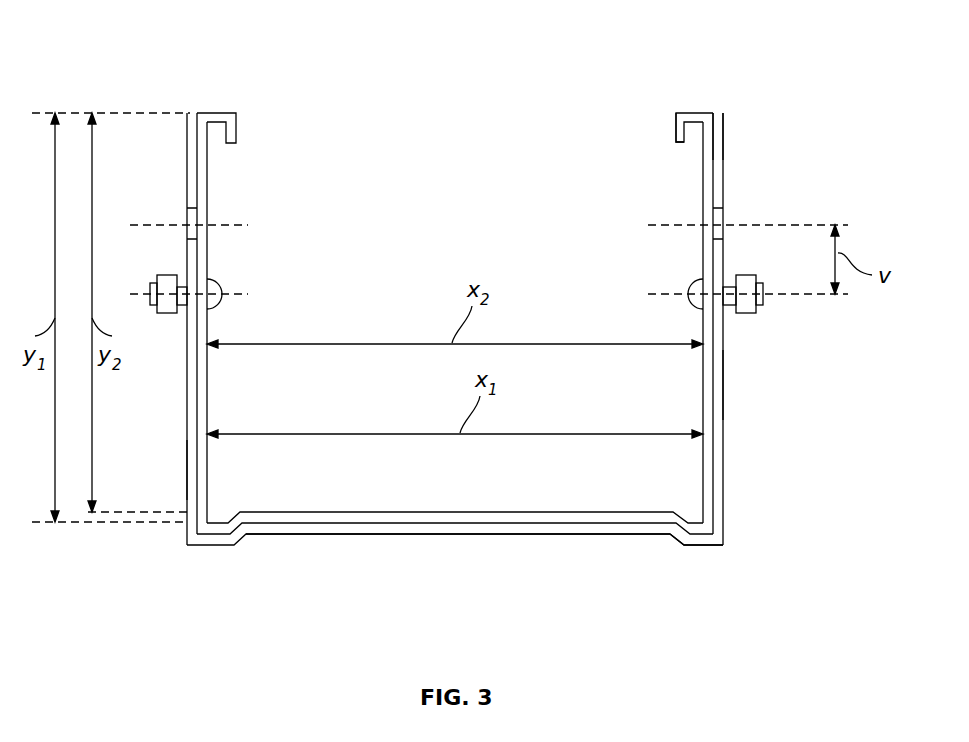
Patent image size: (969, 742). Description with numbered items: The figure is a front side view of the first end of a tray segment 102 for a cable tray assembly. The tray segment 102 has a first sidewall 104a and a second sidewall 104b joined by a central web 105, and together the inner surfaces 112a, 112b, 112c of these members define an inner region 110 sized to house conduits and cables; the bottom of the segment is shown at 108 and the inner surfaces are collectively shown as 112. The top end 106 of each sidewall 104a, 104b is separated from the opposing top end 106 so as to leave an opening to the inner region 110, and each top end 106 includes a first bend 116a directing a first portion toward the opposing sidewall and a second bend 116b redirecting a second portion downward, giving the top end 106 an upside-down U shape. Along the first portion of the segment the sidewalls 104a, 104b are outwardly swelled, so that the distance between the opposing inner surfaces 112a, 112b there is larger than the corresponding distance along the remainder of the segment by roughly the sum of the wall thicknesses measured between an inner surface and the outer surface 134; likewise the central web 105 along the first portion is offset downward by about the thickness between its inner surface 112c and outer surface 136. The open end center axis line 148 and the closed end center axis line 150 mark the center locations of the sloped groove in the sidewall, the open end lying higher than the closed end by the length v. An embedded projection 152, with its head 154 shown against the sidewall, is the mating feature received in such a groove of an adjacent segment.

The tray segment 102 is at (449, 349).
The first sidewall 104a is at (726, 402).
The second sidewall 104b is at (187, 485).
The central web 105 is at (483, 512).
The top end 106 is at (196, 112).
The bottom wall 108 is at (170, 537).
The inner region 110 is at (468, 234).
The liner 112 is at (515, 328).
The inner surface of first sidewall 112a is at (703, 478).
The inner surface of second sidewall 112b is at (207, 478).
The inner surface of central web 112c is at (393, 512).
The first bend 116a is at (718, 122).
The second bend 116b is at (681, 120).
The outer surface 134 is at (187, 443).
The outer surface of central web 136 is at (650, 534).
The open end center axis line 148 is at (773, 225).
The closed end center axis line 150 is at (840, 298).
The embedded projection 152 is at (186, 286).
The head 154 is at (222, 285).